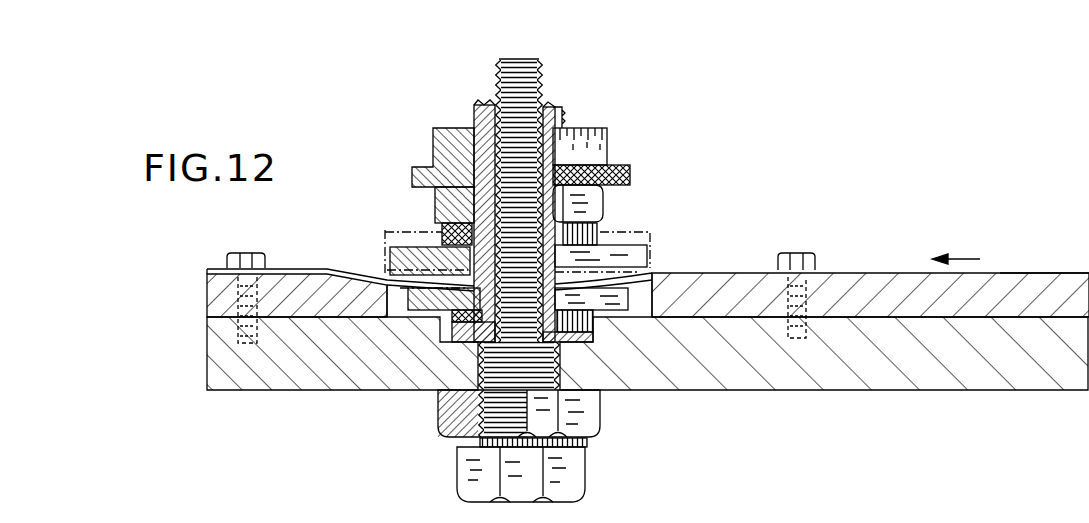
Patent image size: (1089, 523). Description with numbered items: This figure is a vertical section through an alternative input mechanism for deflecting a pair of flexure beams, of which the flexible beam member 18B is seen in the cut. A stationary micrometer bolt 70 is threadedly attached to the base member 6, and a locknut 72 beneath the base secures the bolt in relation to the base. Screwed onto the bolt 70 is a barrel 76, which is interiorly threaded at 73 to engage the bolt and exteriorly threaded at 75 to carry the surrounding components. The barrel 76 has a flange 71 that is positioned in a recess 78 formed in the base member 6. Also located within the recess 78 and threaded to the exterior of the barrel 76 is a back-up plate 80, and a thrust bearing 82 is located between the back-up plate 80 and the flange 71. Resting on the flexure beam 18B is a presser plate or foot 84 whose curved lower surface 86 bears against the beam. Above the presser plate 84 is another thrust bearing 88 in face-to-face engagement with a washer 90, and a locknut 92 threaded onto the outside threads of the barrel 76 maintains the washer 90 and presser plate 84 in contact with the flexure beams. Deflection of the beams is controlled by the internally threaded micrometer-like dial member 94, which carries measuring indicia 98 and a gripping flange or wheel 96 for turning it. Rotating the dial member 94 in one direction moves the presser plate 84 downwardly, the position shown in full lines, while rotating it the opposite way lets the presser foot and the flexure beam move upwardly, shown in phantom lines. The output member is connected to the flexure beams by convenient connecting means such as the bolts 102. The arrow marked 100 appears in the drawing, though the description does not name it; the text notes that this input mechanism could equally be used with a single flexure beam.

The base member 6 is at (760, 392).
The flexible beam member 18B is at (742, 272).
The micrometer bolt 70 is at (516, 59).
The flange 71 is at (470, 341).
The locknut 72 is at (601, 412).
The interior threads 73 is at (470, 156).
The exterior threads 75 is at (473, 116).
The barrel 76 is at (488, 103).
The recess 78 is at (590, 334).
The back-up plate 80 is at (607, 303).
The thrust bearing 82 is at (450, 319).
The presser plate 84 is at (650, 262).
The curved lower surface 86 is at (400, 263).
The thrust bearing 88 is at (443, 236).
The washer 90 is at (444, 230).
The locknut 92 is at (604, 207).
The dial member 94 is at (608, 144).
The gripping flange 96 is at (620, 178).
The measuring indicia 98 is at (606, 130).
The plate surface 100 is at (1034, 272).
The bolts 102 is at (796, 252).